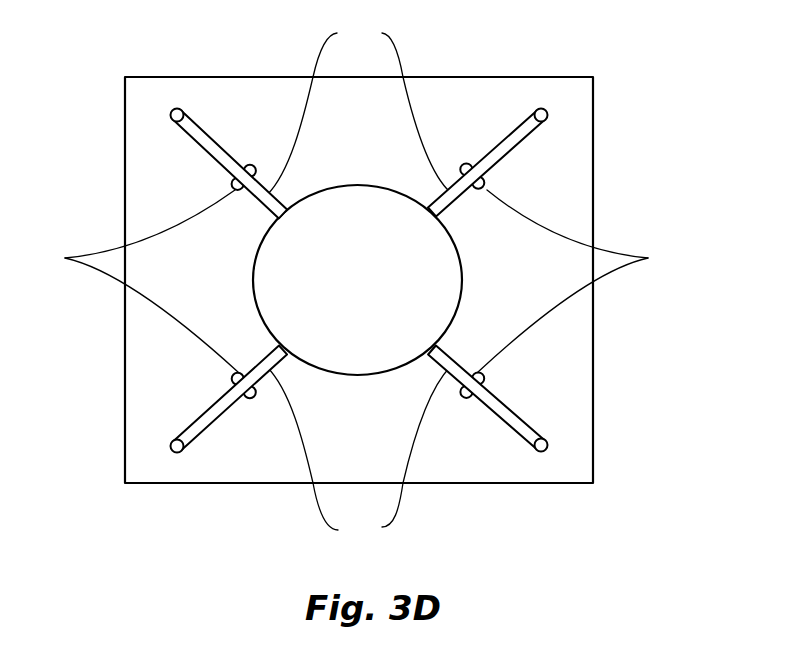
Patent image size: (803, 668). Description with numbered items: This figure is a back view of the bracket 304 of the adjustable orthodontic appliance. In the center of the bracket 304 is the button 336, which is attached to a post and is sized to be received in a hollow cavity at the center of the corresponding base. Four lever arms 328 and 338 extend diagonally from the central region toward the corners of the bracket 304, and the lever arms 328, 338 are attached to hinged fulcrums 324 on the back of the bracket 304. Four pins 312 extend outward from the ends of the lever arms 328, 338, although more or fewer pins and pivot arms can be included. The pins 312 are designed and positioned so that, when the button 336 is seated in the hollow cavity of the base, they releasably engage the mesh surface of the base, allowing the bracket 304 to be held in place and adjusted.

The bracket 304 is at (465, 483).
The pin 312 is at (177, 109).
The hinged fulcrum 324 is at (362, 281).
The lever arm 328 is at (358, 108).
The button 336 is at (453, 278).
The lever arm 338 is at (358, 454).